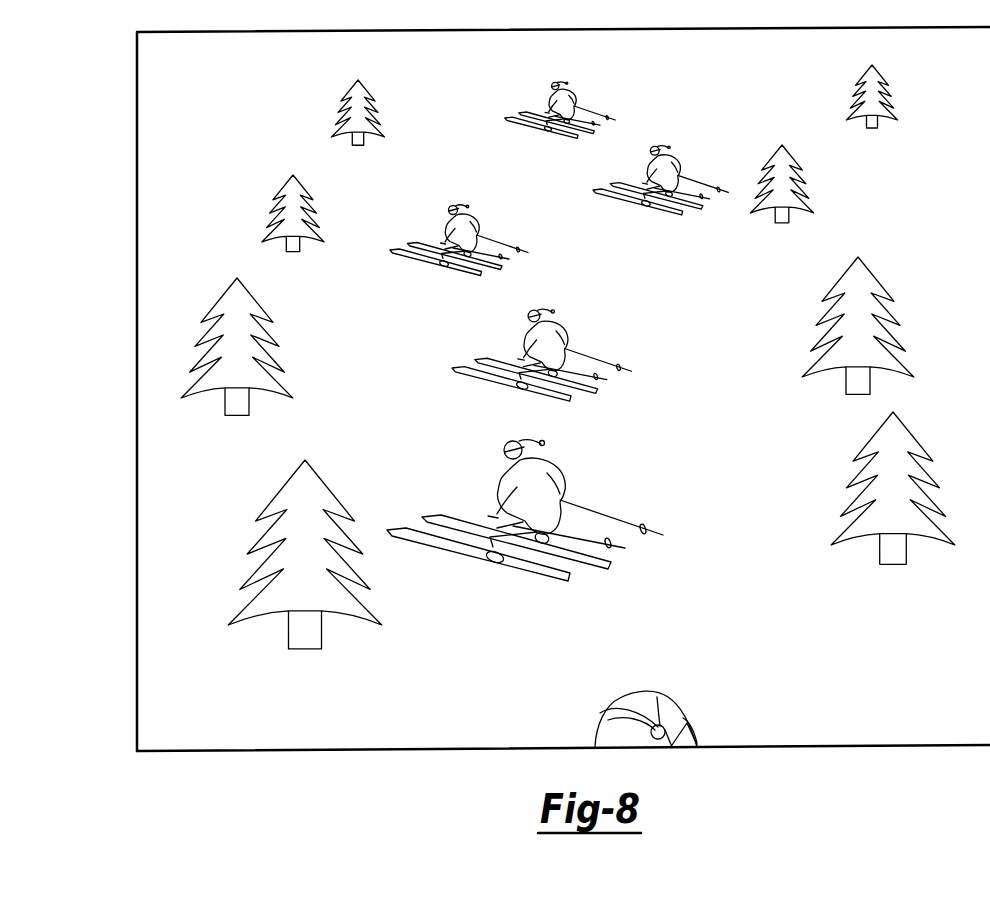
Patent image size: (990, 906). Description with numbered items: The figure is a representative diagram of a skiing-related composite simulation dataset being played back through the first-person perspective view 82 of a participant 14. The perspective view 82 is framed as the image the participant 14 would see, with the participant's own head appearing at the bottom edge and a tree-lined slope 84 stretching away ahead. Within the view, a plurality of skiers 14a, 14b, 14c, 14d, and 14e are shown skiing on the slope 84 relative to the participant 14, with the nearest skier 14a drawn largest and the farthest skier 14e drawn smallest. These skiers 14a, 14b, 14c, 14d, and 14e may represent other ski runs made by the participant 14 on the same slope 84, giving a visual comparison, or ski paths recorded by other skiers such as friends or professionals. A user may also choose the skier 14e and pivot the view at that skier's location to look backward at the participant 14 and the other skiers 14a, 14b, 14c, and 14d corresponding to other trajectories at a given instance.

The first-person perspective view 82 is at (96, 100).
The slope 84 is at (410, 393).
The participant 14 is at (607, 712).
The skier 14a is at (542, 495).
The skier 14b is at (567, 343).
The skier 14c is at (470, 223).
The skier 14d is at (680, 166).
The skier 14e is at (567, 94).